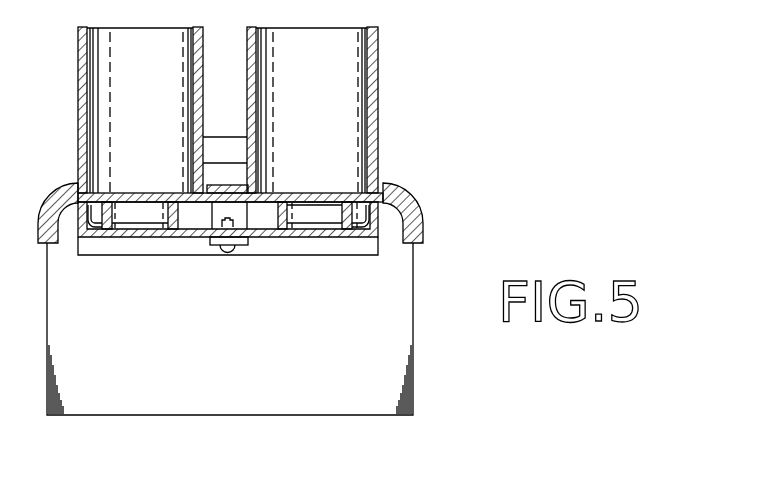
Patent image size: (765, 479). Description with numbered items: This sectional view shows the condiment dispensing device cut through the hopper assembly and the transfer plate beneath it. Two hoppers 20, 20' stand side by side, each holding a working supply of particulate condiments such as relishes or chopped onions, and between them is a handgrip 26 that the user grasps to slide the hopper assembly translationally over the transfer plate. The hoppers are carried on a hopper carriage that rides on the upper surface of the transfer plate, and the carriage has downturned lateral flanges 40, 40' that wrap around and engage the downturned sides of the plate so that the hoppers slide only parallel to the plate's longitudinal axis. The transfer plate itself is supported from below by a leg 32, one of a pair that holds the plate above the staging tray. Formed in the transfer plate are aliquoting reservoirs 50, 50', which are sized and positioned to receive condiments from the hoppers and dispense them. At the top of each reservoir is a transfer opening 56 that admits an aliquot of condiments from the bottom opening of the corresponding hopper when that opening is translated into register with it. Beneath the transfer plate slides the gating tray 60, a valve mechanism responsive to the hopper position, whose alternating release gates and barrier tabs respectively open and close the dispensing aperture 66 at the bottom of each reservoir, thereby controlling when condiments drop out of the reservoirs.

The hopper 20 is at (109, 110).
The hopper 20' is at (347, 110).
The handgrip 26 is at (222, 137).
The leg 32 is at (398, 320).
The downturned lateral flange 40 is at (46, 194).
The downturned lateral flange 40' is at (425, 201).
The aliquoting reservoir 50 is at (104, 252).
The aliquoting reservoir 50' is at (345, 252).
The transfer opening 56 is at (140, 193).
The gating tray 60 is at (150, 237).
The dispensing aperture 66 is at (297, 236).